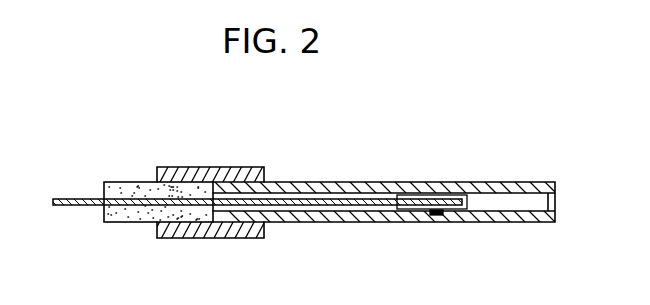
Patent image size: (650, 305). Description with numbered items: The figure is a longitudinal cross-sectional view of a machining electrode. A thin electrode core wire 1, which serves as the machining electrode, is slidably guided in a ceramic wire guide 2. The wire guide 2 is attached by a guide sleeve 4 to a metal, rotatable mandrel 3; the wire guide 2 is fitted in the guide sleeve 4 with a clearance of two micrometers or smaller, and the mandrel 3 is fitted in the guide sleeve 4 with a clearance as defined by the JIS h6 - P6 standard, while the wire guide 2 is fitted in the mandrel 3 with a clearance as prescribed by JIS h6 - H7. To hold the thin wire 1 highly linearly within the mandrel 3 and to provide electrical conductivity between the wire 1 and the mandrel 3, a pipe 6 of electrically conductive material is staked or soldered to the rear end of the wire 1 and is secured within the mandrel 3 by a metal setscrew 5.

The electrode core wire 1 is at (76, 199).
The wire guide 2 is at (128, 222).
The mandrel 3 is at (313, 222).
The guide sleeve 4 is at (222, 168).
The metal setscrew 5 is at (436, 222).
The pipe 6 is at (457, 196).